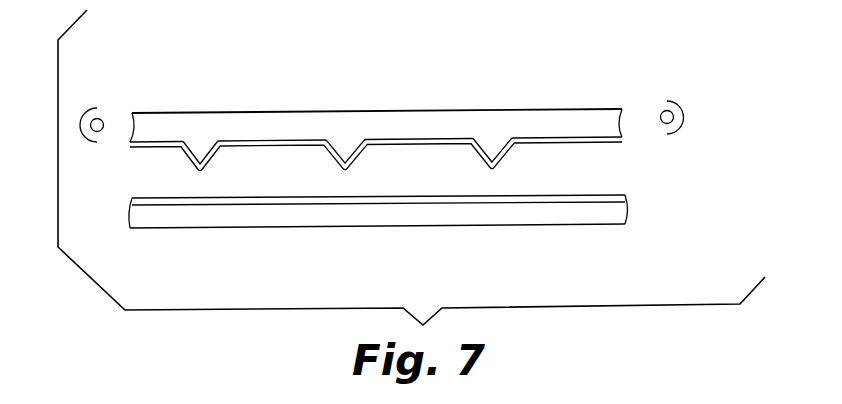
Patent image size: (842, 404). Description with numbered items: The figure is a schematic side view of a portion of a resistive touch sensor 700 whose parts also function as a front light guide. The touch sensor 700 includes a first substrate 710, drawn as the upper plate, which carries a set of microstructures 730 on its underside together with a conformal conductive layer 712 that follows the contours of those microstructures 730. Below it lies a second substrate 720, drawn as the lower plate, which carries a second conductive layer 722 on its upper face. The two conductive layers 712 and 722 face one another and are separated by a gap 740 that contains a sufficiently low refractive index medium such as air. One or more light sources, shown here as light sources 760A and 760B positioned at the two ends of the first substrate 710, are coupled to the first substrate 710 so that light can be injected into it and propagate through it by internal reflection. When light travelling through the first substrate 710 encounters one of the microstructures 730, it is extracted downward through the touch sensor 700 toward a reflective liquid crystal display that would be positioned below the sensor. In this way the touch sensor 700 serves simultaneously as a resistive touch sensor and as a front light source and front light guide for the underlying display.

The touch sensor 700 is at (612, 43).
The first substrate 710 is at (405, 124).
The conformal conductive layer 712 is at (623, 138).
The second substrate 720 is at (420, 207).
The second conductive layer 722 is at (623, 197).
The microstructures 730 is at (202, 151).
The gap 740 is at (423, 182).
The light source 760A is at (100, 118).
The light source 760B is at (661, 112).